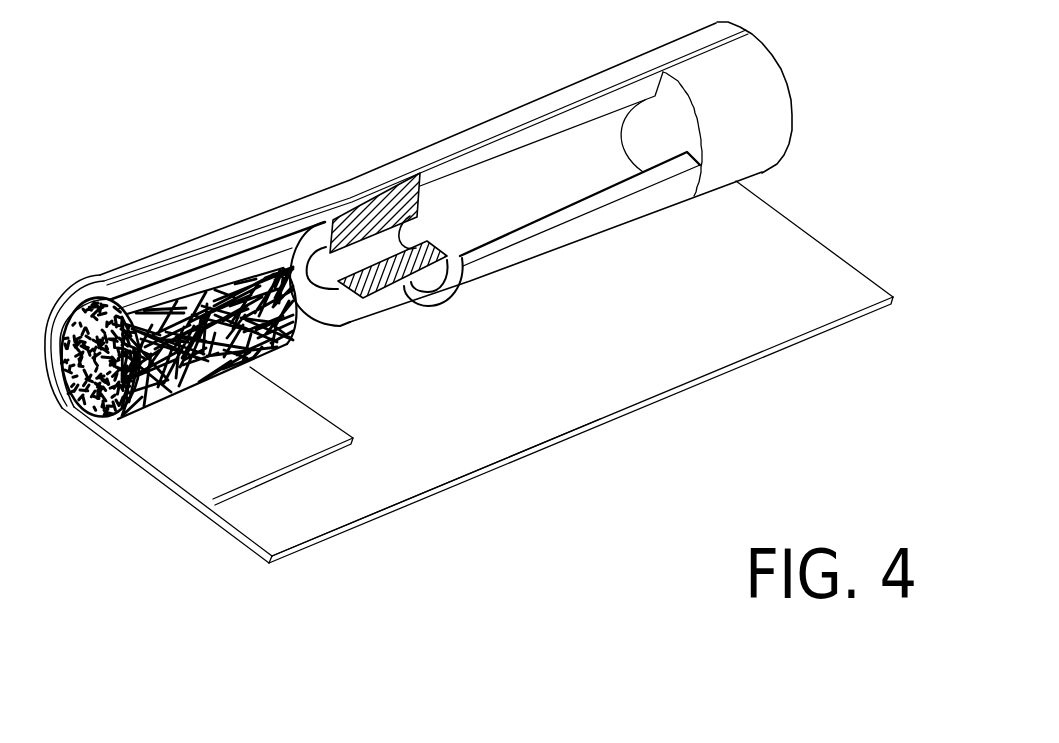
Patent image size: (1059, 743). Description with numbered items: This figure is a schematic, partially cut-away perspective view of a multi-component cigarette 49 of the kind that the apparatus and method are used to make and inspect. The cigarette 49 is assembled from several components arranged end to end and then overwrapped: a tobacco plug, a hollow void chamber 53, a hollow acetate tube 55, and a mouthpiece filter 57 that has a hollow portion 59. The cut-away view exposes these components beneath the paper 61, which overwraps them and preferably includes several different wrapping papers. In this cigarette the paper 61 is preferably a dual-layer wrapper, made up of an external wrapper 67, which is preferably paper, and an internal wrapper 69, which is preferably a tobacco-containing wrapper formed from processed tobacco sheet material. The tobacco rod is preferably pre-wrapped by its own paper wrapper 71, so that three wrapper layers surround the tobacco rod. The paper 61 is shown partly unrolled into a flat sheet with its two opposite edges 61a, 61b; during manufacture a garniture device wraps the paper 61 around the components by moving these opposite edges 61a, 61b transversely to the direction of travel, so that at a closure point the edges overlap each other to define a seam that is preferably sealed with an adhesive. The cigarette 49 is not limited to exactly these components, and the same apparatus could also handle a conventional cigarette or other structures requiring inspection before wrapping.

The multi-component cigarette 49 is at (397, 118).
The hollow void chamber 53 is at (305, 243).
The hollow acetate tube 55 is at (190, 305).
The mouthpiece filter 57 is at (738, 62).
The hollow portion 59 is at (593, 147).
The paper 61 is at (598, 405).
The edge of the paper 61a is at (448, 487).
The edge of the paper 61b is at (492, 137).
The external wrapper 67 is at (683, 395).
The internal wrapper 69 is at (737, 352).
The paper wrapper 71 is at (178, 448).